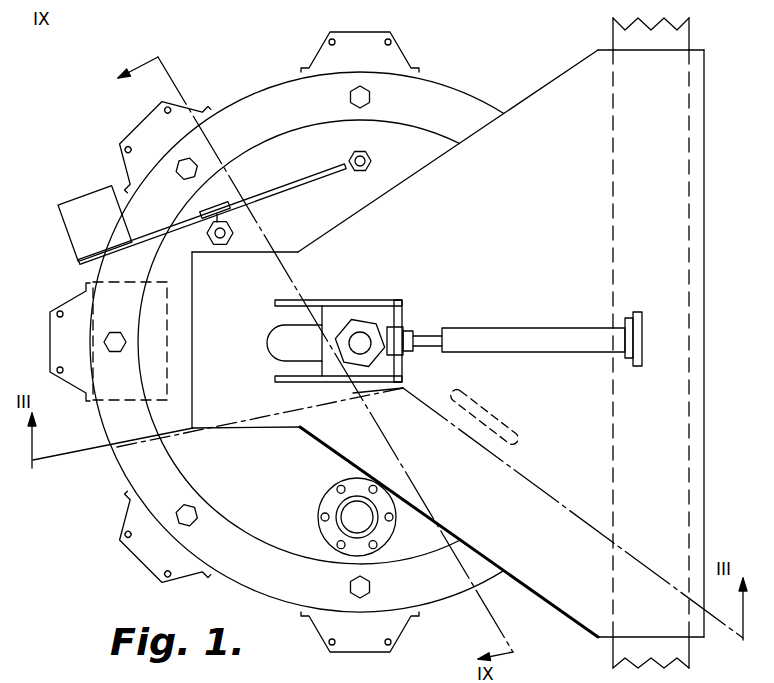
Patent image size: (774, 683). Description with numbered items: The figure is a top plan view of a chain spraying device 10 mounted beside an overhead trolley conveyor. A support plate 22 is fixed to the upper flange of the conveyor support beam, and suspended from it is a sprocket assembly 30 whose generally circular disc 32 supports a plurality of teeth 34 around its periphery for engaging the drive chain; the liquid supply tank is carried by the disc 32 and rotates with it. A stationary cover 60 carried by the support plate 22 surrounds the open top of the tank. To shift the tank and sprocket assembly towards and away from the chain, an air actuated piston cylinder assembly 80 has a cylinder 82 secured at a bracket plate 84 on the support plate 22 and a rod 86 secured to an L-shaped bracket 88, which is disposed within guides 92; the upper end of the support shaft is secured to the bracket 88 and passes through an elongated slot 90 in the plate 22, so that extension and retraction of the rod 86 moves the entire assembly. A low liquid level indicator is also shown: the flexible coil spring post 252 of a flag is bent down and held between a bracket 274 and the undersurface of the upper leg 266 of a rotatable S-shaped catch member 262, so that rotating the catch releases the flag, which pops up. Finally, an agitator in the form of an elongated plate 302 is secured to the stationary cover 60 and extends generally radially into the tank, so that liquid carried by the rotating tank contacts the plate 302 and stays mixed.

The chain spraying device 10 is at (84, 169).
The support plate 22 is at (670, 100).
The sprocket assembly 30 is at (236, 84).
The sprocket disc 32 is at (278, 95).
The teeth 34 is at (387, 58).
The stationary cover 60 is at (190, 452).
The piston cylinder assembly 80 is at (482, 315).
The cylinder 82 is at (548, 335).
The bracket plate 84 is at (640, 320).
The rod 86 is at (420, 333).
The L-shaped bracket 88 is at (358, 312).
The elongated slot 90 is at (268, 322).
The guides 92 is at (303, 302).
The flexible post 252 is at (300, 165).
The S-shaped member 262 is at (233, 232).
The upper leg 266 is at (216, 245).
The bracket 274 is at (206, 207).
The elongated plate 302 is at (521, 409).